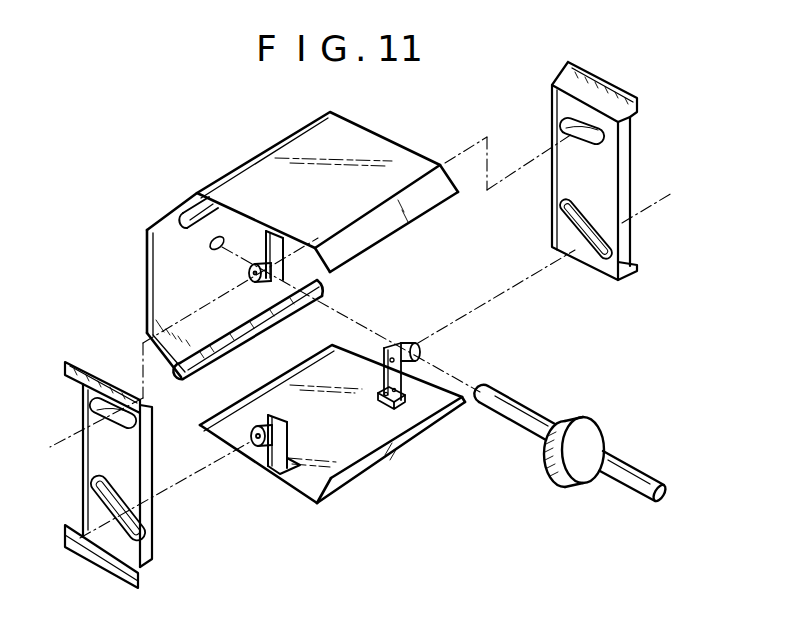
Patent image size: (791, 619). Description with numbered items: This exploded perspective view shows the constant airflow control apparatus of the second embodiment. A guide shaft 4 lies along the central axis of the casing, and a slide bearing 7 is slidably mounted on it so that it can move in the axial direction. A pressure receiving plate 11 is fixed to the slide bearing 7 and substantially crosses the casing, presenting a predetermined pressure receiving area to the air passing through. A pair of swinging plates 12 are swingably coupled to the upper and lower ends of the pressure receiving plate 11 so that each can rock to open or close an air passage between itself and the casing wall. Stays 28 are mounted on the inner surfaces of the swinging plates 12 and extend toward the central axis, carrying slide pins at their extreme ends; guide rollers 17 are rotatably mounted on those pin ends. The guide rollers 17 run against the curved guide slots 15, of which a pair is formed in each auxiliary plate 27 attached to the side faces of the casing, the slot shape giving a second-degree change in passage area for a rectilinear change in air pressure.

The guide shaft 4 is at (523, 420).
The slide bearing 7 is at (600, 436).
The pressure receiving plate 11 is at (147, 279).
The swinging plate 12 is at (380, 145).
The guide slot 15 is at (592, 136).
The guide roller 17 is at (258, 281).
The auxiliary plate 27 is at (630, 170).
The stay 28 is at (272, 229).